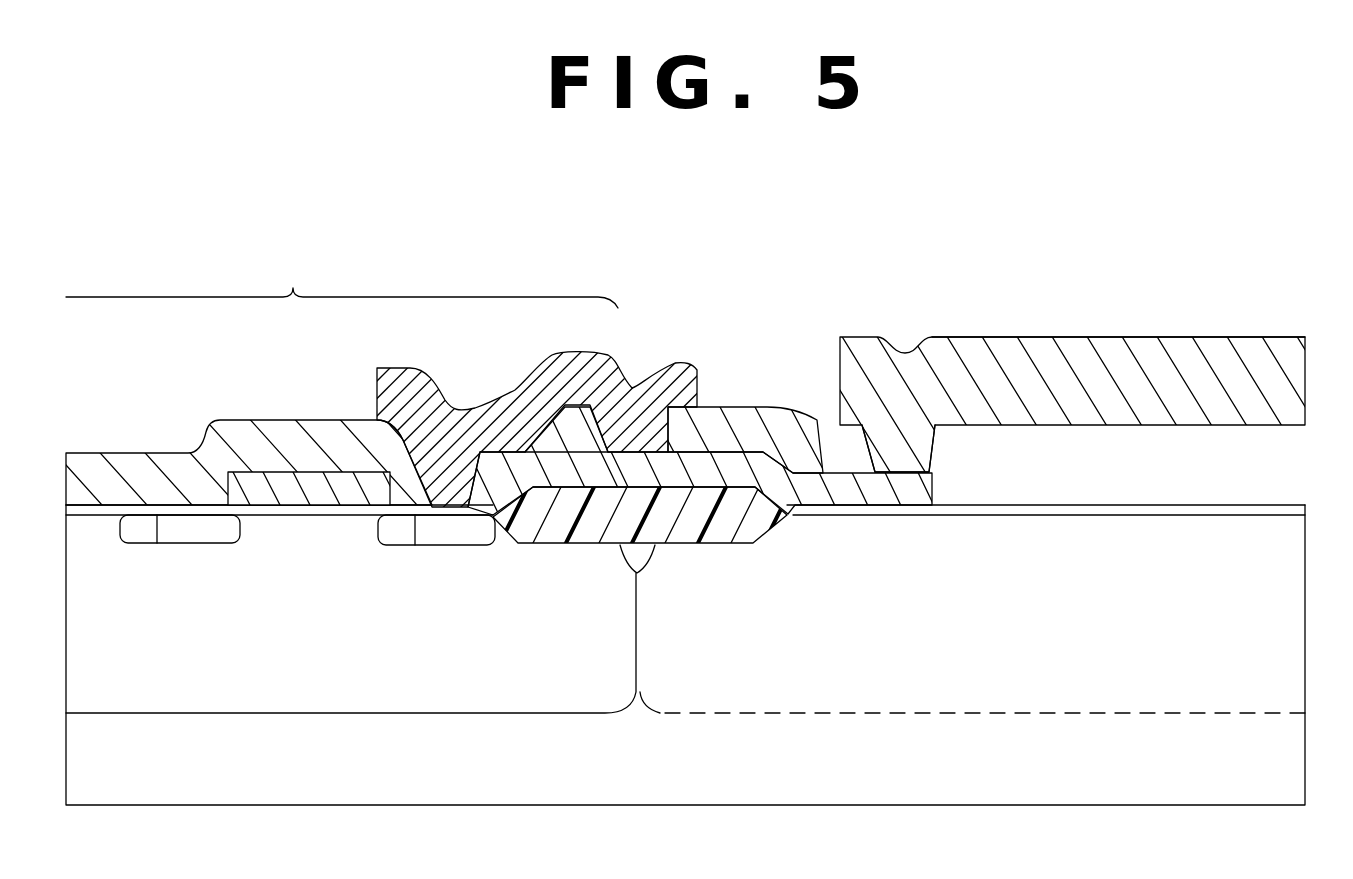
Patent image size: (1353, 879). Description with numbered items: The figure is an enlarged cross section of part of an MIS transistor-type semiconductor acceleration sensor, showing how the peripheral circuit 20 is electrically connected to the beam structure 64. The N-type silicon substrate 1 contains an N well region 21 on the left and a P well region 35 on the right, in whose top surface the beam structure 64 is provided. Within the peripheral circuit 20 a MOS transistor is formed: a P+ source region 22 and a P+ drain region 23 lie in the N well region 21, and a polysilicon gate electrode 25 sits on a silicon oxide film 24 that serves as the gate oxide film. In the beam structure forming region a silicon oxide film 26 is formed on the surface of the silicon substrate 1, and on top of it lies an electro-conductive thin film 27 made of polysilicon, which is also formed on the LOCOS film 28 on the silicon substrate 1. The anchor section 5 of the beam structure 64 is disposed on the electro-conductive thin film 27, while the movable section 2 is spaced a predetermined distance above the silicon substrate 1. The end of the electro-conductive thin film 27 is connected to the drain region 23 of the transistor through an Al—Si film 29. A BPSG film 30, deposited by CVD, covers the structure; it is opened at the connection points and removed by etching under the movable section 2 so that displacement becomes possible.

The silicon substrate 1 is at (1297, 753).
The movable section 2 is at (1150, 352).
The anchor section 5 is at (930, 447).
The peripheral circuit 20 is at (342, 279).
The N well region 21 is at (402, 703).
The P+ source region 22 is at (217, 543).
The P+ drain region 23 is at (472, 545).
The silicon oxide film 24 is at (317, 507).
The polysilicon gate electrode 25 is at (313, 465).
The silicon oxide film 26 is at (1000, 508).
The electro-conductive thin film 27 is at (735, 442).
The LOCOS film 28 is at (712, 535).
The Al—Si film 29 is at (613, 362).
The BPSG film 30 is at (232, 430).
The P well region 35 is at (1078, 713).
The beam structure 64 is at (1045, 333).